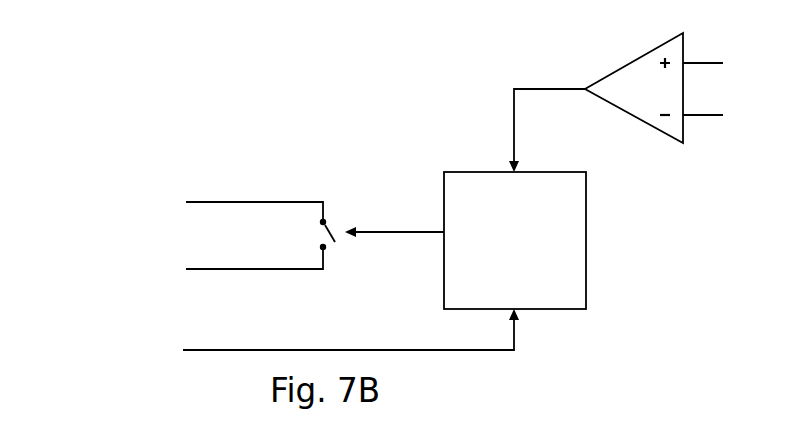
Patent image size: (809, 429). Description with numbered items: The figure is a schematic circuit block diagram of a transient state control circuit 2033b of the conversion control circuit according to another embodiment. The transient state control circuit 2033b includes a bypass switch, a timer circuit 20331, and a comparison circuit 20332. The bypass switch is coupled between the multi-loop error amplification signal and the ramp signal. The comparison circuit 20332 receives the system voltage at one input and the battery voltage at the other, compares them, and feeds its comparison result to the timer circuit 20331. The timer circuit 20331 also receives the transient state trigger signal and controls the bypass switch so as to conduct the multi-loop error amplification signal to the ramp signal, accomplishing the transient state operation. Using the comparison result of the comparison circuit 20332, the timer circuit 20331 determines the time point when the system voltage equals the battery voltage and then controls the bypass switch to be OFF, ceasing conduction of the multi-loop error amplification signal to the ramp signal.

The transient state control circuit 2033b is at (128, 80).
The comparison circuit 20332 is at (645, 55).
The timer circuit 20331 is at (482, 282).